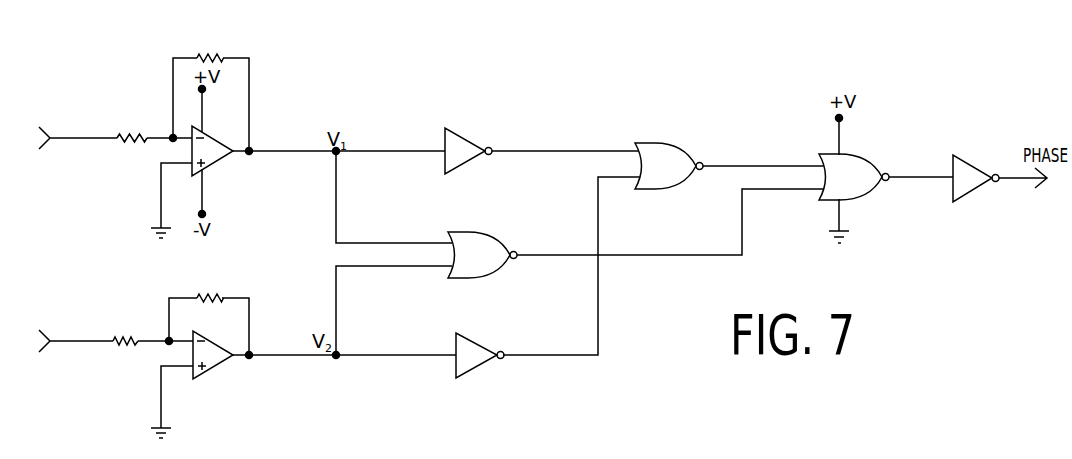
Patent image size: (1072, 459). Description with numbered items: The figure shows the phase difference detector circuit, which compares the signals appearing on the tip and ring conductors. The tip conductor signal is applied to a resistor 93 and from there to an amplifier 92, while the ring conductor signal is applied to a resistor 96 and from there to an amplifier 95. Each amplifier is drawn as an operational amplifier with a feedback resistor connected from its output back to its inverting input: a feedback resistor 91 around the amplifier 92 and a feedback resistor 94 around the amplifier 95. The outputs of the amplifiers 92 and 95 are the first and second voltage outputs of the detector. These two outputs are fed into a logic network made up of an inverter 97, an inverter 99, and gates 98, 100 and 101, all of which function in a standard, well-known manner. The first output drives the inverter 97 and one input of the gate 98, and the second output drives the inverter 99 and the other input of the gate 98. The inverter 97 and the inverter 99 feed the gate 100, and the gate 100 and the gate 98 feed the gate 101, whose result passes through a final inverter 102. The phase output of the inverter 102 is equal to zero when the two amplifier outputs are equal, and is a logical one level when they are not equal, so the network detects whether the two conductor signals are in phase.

The feedback resistor 91 is at (210, 47).
The amplifier 92 is at (220, 163).
The resistor 93 is at (132, 127).
The feedback resistor 94 is at (210, 287).
The amplifier 95 is at (213, 367).
The resistor 96 is at (127, 353).
The inverter 97 is at (468, 143).
The gate 98 is at (482, 243).
The inverter 99 is at (480, 347).
The gate 100 is at (669, 155).
The gate 101 is at (865, 157).
The inverter 102 is at (975, 193).